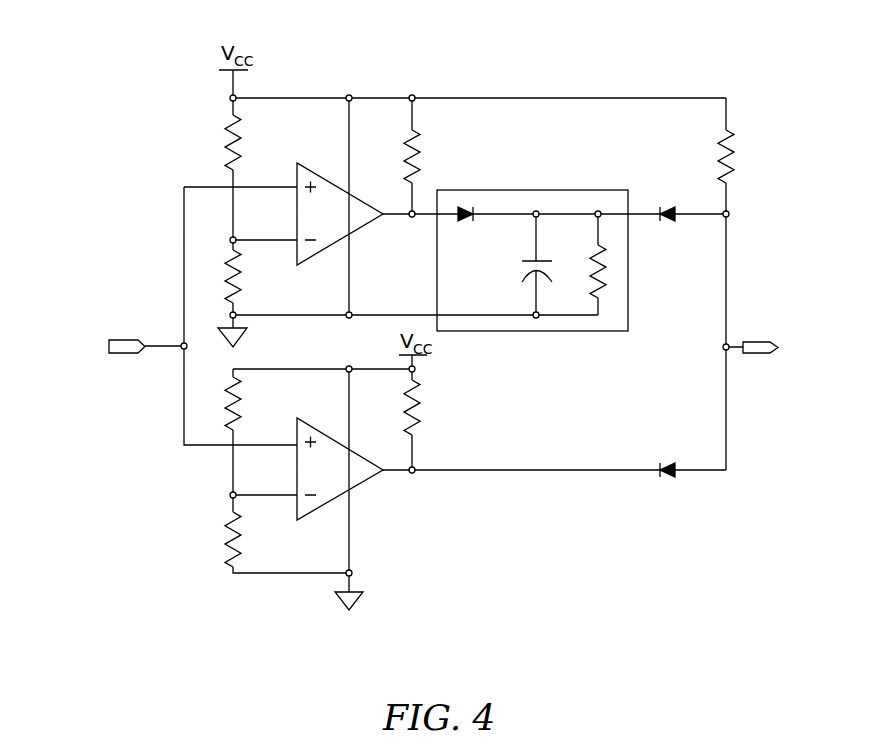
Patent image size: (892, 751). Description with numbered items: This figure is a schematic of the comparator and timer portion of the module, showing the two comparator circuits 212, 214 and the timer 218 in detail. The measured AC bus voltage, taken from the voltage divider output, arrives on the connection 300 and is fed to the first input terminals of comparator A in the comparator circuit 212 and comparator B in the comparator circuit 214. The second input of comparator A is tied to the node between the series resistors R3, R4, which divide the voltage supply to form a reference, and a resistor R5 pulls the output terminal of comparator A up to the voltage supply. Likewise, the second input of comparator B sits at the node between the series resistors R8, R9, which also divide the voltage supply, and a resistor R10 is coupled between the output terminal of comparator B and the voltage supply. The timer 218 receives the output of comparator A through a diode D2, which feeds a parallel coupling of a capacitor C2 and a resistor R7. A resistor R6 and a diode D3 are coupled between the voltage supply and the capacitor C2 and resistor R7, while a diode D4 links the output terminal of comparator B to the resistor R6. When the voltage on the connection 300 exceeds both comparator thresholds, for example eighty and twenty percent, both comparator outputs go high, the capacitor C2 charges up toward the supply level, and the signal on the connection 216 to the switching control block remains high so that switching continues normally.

The comparator circuit 212 is at (316, 163).
The comparator circuit 214 is at (370, 507).
The connection 216 is at (760, 354).
The timer 218 is at (555, 281).
The connection 300 is at (124, 354).
The resistor R3 is at (215, 142).
The resistor R4 is at (215, 276).
The resistor R5 is at (433, 156).
The resistor R6 is at (743, 156).
The resistor R7 is at (583, 264).
The resistor R8 is at (215, 403).
The resistor R9 is at (215, 539).
The resistor R10 is at (436, 407).
The capacitor C2 is at (522, 264).
The diode D2 is at (479, 230).
The diode D3 is at (675, 229).
The diode D4 is at (661, 454).